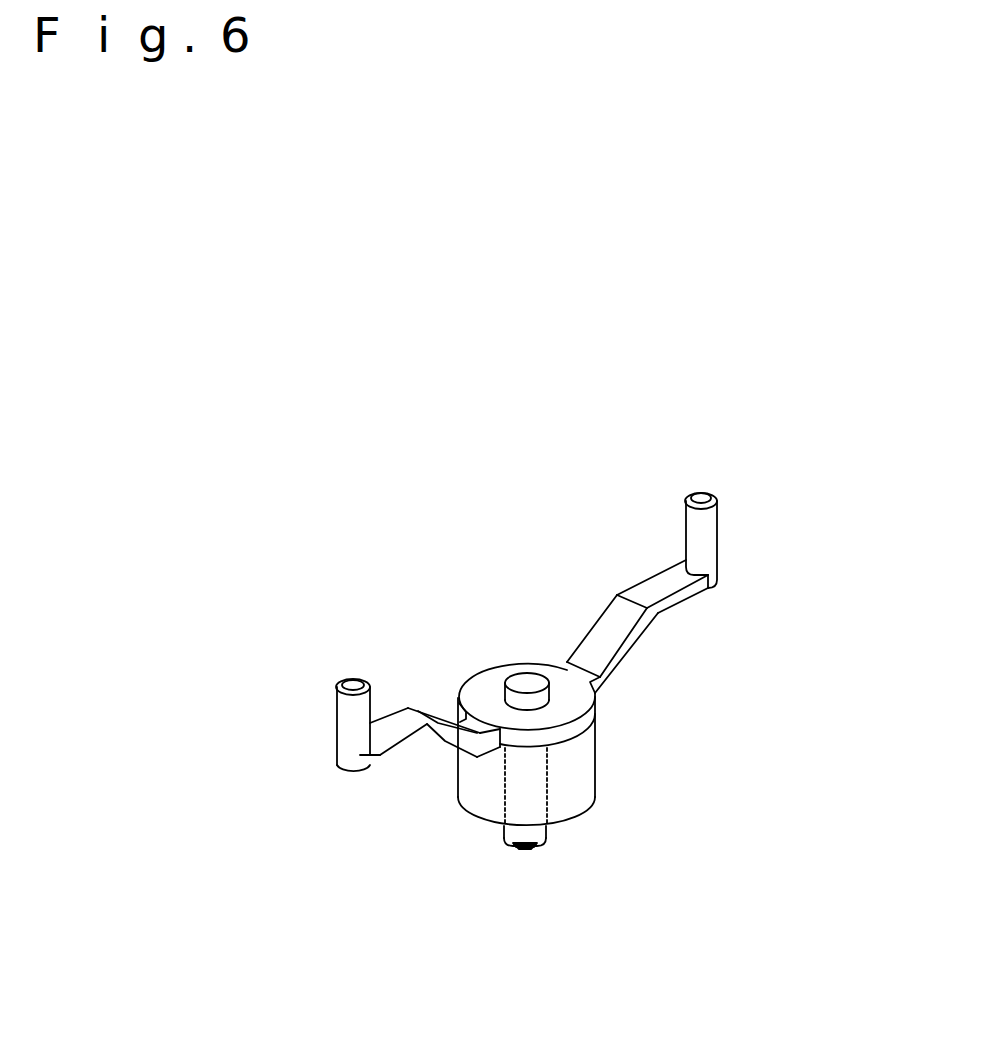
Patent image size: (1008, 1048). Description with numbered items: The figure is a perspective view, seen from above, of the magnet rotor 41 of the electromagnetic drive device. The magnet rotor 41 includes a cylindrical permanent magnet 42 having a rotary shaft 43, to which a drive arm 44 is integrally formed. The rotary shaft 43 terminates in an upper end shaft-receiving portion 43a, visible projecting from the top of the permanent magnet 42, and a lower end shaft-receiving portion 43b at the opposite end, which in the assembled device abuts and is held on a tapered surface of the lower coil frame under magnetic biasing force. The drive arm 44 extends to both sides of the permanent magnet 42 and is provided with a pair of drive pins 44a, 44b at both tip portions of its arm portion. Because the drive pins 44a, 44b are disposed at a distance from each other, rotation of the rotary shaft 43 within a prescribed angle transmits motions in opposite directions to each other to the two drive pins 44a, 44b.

The magnet rotor 41 is at (790, 436).
The cylindrical permanent magnet 42 is at (585, 772).
The rotary shaft 43 is at (548, 831).
The upper end shaft-receiving portion 43a is at (523, 680).
The lower end shaft-receiving portion 43b is at (525, 850).
The drive arm 44 is at (658, 615).
The drive pin 44a is at (705, 532).
The drive pin 44b is at (352, 680).